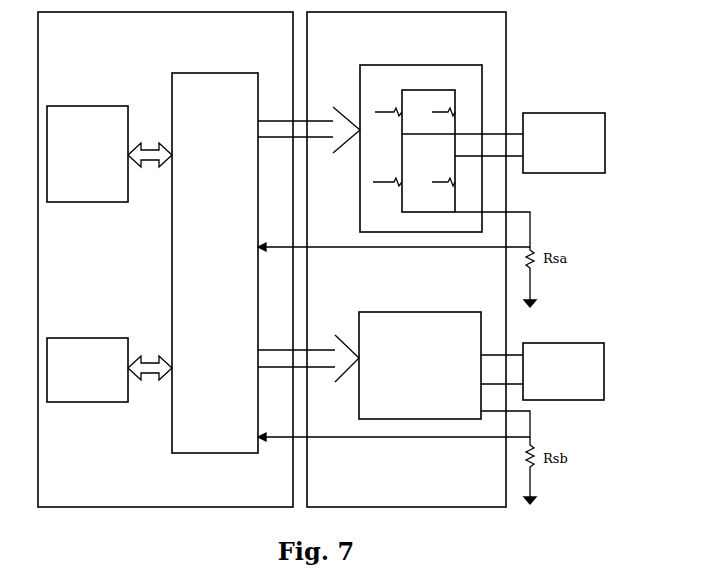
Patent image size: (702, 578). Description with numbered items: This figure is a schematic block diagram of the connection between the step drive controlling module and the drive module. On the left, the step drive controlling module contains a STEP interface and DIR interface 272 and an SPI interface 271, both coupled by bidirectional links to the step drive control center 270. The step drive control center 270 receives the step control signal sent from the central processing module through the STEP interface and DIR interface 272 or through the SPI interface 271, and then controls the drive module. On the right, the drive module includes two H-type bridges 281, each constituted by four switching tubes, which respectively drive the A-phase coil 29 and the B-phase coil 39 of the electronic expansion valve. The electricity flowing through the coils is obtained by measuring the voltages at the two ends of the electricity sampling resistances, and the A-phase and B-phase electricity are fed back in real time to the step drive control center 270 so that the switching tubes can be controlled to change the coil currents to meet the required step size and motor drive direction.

The step drive control center 270 is at (190, 387).
The SPI interface 271 is at (104, 405).
The DIR interface 272 is at (110, 207).
The H-type bridge 281 is at (376, 128).
The A-phase coil 29 is at (562, 108).
The B-phase coil 39 is at (576, 338).